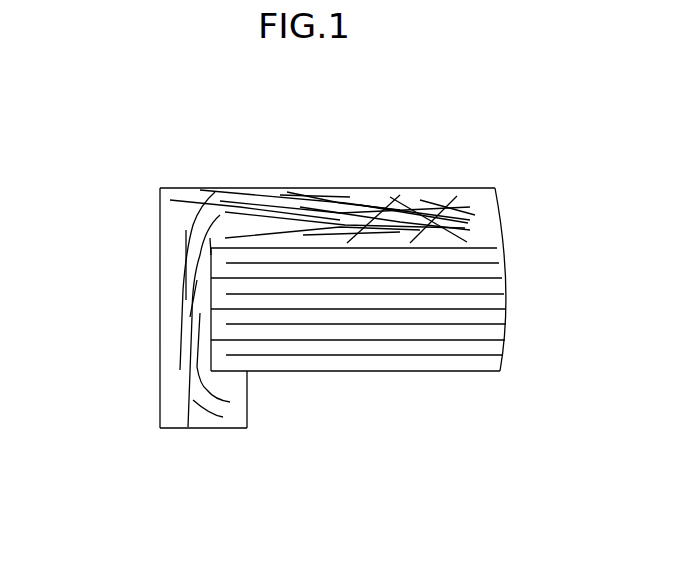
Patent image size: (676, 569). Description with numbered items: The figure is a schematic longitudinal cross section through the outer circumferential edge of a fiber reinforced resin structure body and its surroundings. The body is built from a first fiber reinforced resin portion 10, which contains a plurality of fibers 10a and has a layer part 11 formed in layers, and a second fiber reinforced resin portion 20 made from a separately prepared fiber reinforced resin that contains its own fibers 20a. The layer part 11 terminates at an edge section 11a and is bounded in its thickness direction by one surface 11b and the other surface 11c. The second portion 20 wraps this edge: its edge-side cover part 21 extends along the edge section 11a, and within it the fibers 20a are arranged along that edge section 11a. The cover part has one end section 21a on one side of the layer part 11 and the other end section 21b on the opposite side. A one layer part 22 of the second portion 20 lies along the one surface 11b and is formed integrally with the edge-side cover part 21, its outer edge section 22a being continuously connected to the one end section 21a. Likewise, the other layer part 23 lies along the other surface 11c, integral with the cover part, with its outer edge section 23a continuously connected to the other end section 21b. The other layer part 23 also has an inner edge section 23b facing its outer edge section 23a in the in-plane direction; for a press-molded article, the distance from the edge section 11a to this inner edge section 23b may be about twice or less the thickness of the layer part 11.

The first fiber reinforced resin portion 10 is at (469, 378).
The fibers 10a is at (354, 373).
The layer part 11 is at (467, 300).
The edge section 11a is at (205, 303).
The one surface 11b is at (366, 246).
The other surface 11c is at (424, 373).
The second fiber reinforced resin portion 20 is at (243, 186).
The fibers 20a is at (437, 207).
The edge-side cover part 21 is at (168, 278).
The one end section 21a is at (158, 243).
The other end section 21b is at (160, 370).
The one layer part 22 is at (303, 188).
The outer edge section 22a is at (158, 205).
The other layer part 23 is at (208, 402).
The outer edge section 23a is at (160, 397).
The inner edge section 23b is at (248, 398).